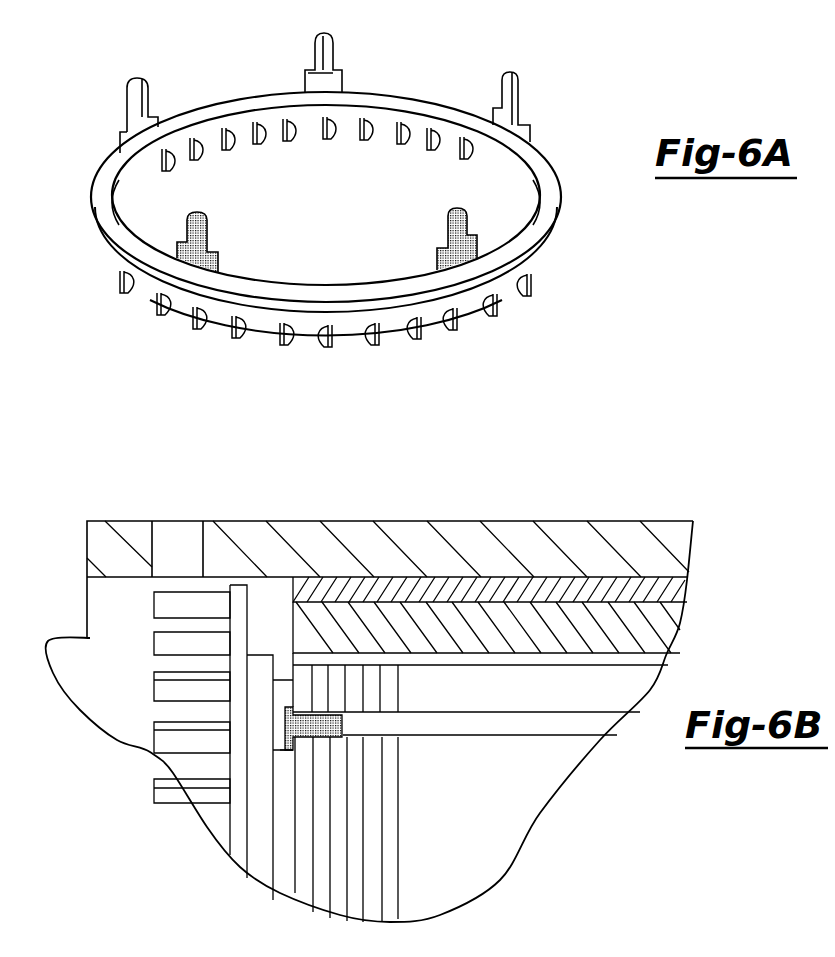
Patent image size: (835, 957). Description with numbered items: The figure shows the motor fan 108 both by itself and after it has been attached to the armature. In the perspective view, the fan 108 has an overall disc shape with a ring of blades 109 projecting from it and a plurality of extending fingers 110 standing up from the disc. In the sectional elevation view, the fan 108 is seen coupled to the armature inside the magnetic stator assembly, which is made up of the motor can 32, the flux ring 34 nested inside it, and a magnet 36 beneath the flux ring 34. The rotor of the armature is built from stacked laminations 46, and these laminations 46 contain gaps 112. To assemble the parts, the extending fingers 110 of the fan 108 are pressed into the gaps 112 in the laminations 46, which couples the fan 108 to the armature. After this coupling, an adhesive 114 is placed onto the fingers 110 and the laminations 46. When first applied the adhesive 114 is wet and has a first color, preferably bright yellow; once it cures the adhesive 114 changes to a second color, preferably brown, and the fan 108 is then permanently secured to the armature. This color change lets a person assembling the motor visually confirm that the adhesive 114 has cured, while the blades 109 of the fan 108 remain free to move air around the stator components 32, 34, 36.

In FIG. 6B, the motor can 32 is at (512, 520).
In FIG. 6B, the flux ring 34 is at (687, 590).
In FIG. 6B, the magnet 36 is at (657, 628).
In FIG. 6B, the laminations 46 is at (580, 735).
In FIG. 6A, the motor fan 108 is at (290, 372).
In FIG. 6B, the motor fan 108 is at (203, 760).
In FIG. 6A, the blades 109 is at (466, 152).
In FIG. 6B, the blades 109 is at (273, 680).
In FIG. 6A, the extending fingers 110 is at (323, 52).
In FIG. 6B, the extending fingers 110 is at (330, 721).
In FIG. 6B, the gaps 112 is at (487, 727).
In FIG. 6B, the adhesive 114 is at (323, 743).